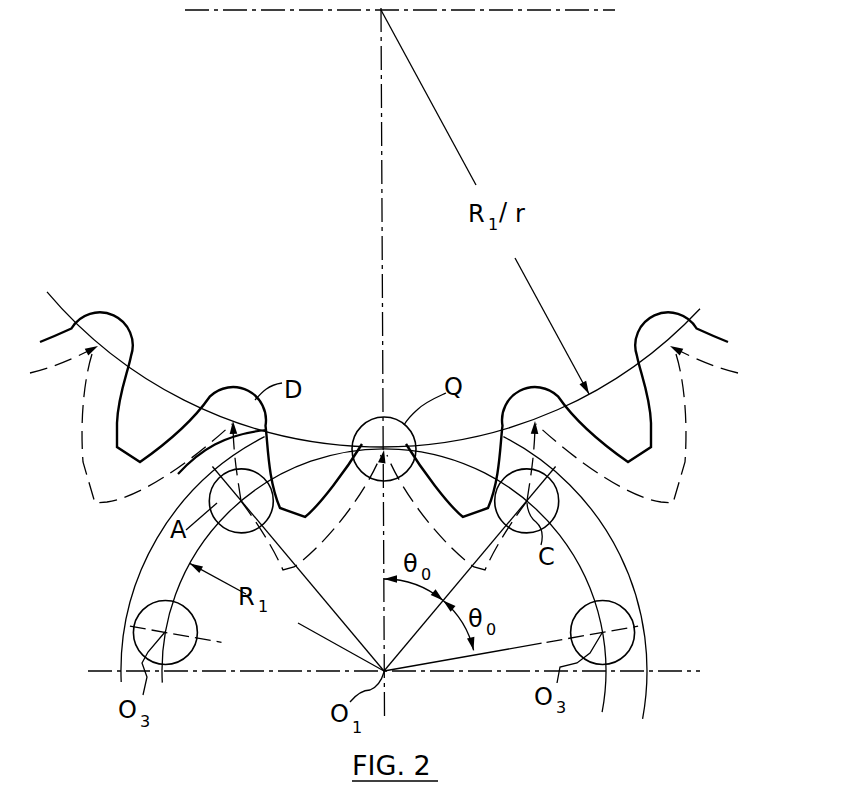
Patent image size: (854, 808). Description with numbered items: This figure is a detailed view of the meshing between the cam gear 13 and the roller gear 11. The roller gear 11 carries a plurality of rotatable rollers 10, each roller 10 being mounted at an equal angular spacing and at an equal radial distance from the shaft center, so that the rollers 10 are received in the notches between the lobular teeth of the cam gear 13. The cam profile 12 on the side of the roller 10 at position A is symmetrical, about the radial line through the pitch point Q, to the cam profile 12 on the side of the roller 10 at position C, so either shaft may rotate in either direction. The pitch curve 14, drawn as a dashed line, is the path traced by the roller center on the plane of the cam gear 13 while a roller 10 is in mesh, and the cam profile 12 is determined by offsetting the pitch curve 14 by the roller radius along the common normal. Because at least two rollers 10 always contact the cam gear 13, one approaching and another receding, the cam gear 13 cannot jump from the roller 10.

The rotatable roller 10 is at (167, 517).
The roller gear 11 is at (137, 602).
The cam profile 12 is at (117, 407).
The cam gear 13 is at (284, 237).
The pitch curve 14 is at (82, 465).